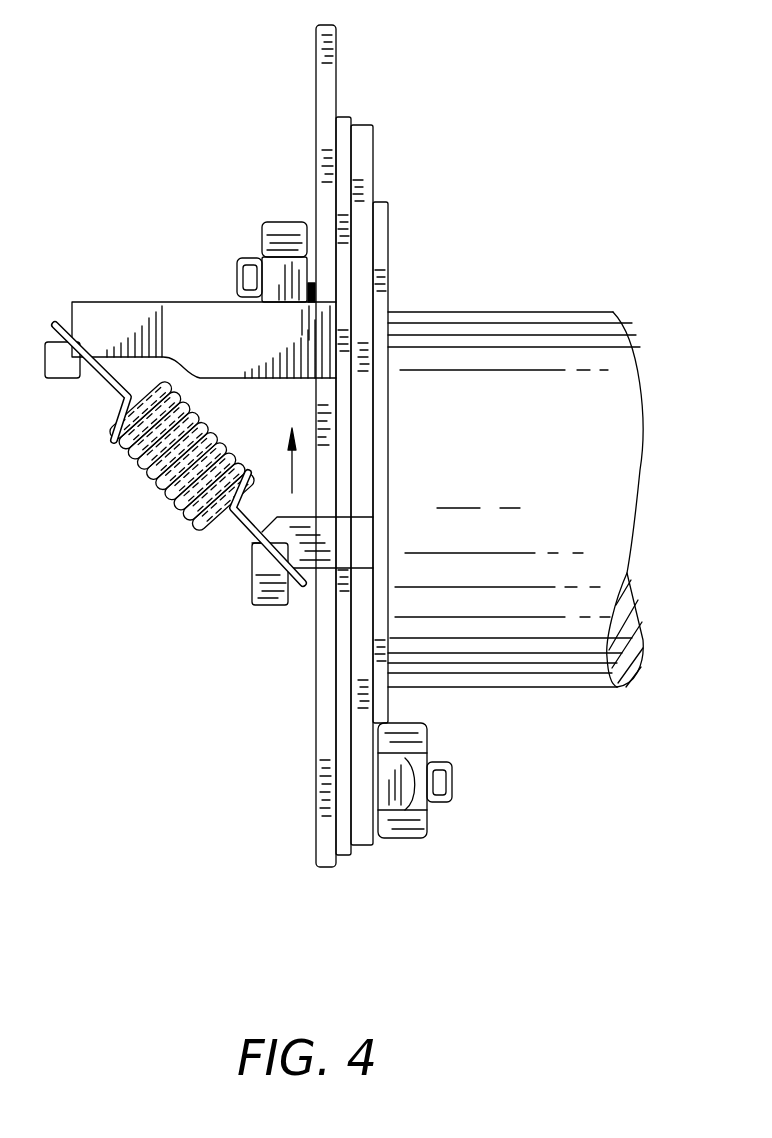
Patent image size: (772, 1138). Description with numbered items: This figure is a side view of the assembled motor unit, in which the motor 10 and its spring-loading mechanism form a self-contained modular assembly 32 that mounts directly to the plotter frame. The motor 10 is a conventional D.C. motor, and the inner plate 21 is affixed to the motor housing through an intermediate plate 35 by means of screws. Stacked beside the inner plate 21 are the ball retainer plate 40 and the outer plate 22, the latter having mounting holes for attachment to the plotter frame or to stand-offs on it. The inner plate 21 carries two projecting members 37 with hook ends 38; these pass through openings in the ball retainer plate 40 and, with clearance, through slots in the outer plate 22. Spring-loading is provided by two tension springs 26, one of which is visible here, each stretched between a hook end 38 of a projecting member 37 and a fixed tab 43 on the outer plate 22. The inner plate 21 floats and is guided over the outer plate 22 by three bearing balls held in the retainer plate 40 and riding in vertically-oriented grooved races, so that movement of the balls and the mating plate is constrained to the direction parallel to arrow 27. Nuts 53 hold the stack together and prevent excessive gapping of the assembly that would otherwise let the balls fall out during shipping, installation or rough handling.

The motor 10 is at (527, 452).
The inner plate 21 is at (366, 162).
The outer plate 22 is at (320, 87).
The tension spring 26 is at (143, 478).
The arrow 27 is at (285, 477).
The modular assembly 32 is at (290, 751).
The intermediate plate 35 is at (383, 237).
The projecting member 37 is at (258, 570).
The hook end 38 is at (265, 606).
The ball retainer plate 40 is at (343, 116).
The fixed tab 43 is at (125, 310).
The nut 53 is at (268, 222).